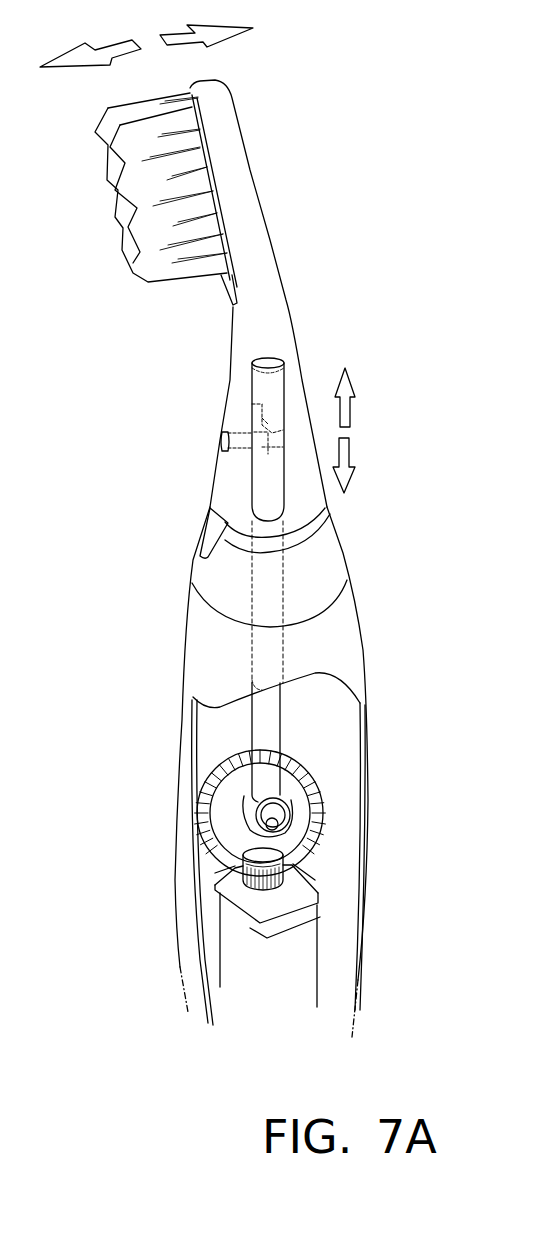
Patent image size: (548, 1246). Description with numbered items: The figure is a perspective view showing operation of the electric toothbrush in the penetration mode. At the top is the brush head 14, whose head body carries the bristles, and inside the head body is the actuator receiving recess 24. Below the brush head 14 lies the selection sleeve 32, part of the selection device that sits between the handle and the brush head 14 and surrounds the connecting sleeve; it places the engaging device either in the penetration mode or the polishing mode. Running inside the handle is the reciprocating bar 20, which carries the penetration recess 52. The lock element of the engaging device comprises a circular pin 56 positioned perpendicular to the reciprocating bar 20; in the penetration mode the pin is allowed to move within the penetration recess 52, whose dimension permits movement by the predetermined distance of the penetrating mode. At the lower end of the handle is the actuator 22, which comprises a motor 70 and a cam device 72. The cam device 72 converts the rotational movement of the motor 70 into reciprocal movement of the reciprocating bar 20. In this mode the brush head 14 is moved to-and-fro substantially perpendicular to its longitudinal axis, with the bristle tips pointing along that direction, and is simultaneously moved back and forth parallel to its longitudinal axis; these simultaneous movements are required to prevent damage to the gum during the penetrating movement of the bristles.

The brush head 14 is at (281, 325).
The actuator receiving recess 24 is at (300, 362).
The penetration recess 52 is at (250, 405).
The circular pin 56 is at (221, 440).
The selection sleeve 32 is at (343, 553).
The reciprocating bar 20 is at (257, 583).
The actuator 22 is at (334, 828).
The cam device 72 is at (235, 822).
The motor 70 is at (257, 965).